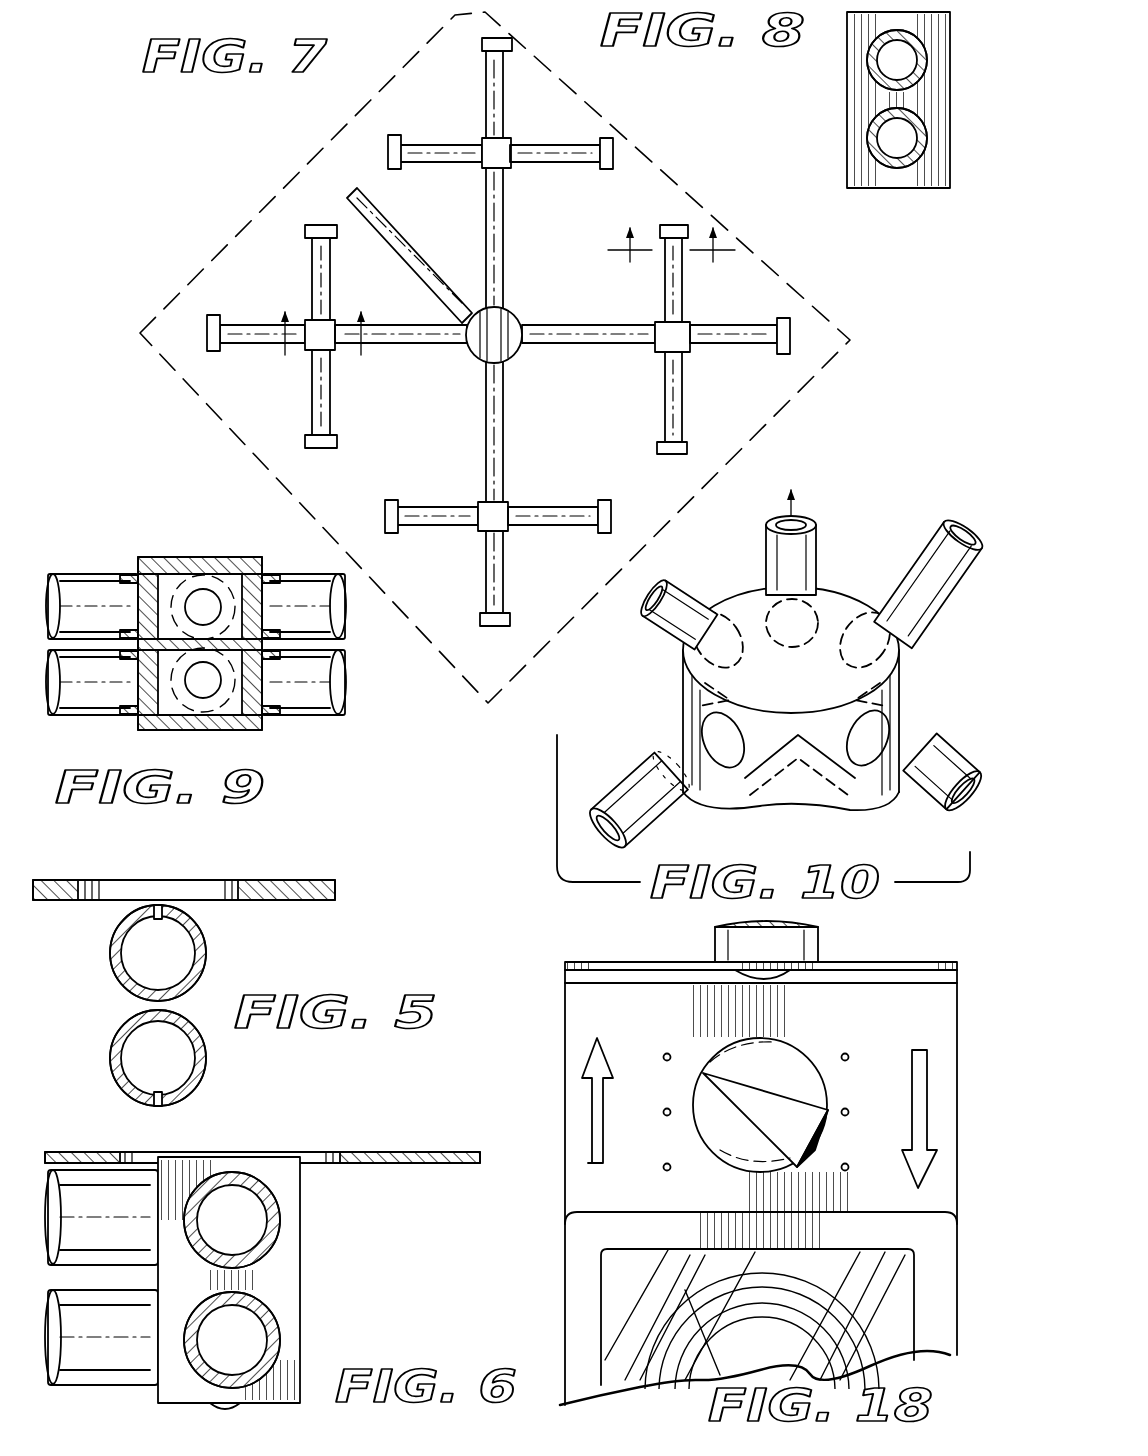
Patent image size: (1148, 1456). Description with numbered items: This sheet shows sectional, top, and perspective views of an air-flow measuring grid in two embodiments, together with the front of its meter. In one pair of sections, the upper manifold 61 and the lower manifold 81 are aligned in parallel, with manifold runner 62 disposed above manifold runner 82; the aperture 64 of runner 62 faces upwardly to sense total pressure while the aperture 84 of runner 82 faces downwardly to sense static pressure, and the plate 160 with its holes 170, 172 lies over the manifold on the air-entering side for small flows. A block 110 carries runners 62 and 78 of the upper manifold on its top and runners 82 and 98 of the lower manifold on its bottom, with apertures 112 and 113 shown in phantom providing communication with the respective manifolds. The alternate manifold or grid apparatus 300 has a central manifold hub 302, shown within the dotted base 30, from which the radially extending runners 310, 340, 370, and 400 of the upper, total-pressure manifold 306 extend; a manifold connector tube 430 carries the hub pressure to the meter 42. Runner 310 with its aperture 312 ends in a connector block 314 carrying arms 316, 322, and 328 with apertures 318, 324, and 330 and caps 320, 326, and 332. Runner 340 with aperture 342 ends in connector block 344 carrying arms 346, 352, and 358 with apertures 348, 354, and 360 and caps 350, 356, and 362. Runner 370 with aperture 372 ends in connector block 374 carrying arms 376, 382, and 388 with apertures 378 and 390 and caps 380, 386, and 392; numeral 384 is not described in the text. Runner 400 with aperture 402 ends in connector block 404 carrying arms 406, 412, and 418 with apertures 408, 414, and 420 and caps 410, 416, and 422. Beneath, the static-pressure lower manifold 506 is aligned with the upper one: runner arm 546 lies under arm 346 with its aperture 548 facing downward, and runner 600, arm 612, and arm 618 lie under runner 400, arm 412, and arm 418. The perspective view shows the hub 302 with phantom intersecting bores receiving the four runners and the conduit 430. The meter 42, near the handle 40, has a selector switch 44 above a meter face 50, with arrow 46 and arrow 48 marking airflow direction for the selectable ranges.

In FIG. 7, the base 30 is at (205, 265).
In FIG. 7, the manifold or grid apparatus 300 is at (258, 140).
In FIG. 7, the manifold hub 302 is at (510, 312).
In FIG. 10, the manifold hub 302 is at (820, 790).
In FIG. 7, the upper manifold 306 is at (321, 396).
In FIG. 8, the upper manifold 306 is at (891, 116).
In FIG. 9, the upper manifold 306 is at (228, 645).
In FIG. 10, the upper manifold 306 is at (786, 671).
In FIG. 7, the manifold runner 310 is at (495, 331).
In FIG. 10, the manifold runner 310 is at (885, 585).
In FIG. 7, the aperture 312 is at (495, 331).
In FIG. 7, the connector block 314 is at (508, 148).
In FIG. 7, the runner arm 316 is at (432, 171).
In FIG. 7, the aperture 318 is at (408, 158).
In FIG. 7, the cap 320 is at (395, 140).
In FIG. 7, the runner arm 322 is at (495, 331).
In FIG. 7, the aperture 324 is at (495, 331).
In FIG. 7, the cap 326 is at (508, 45).
In FIG. 7, the runner arm 328 is at (557, 153).
In FIG. 7, the aperture 330 is at (567, 162).
In FIG. 7, the cap 332 is at (608, 162).
In FIG. 7, the manifold runner 340 is at (588, 349).
In FIG. 10, the manifold runner 340 is at (935, 745).
In FIG. 7, the aperture 342 is at (588, 340).
In FIG. 7, the connector block 344 is at (690, 352).
In FIG. 7, the runner arm 346 is at (663, 280).
In FIG. 8, the runner arm 346 is at (873, 63).
In FIG. 7, the aperture 348 is at (672, 250).
In FIG. 8, the aperture 348 is at (854, 63).
In FIG. 7, the cap 350 is at (675, 232).
In FIG. 8, the cap 350 is at (860, 108).
In FIG. 7, the runner arm 352 is at (739, 333).
In FIG. 7, the aperture 354 is at (750, 345).
In FIG. 7, the cap 356 is at (820, 330).
In FIG. 7, the runner arm 358 is at (670, 397).
In FIG. 7, the aperture 360 is at (668, 427).
In FIG. 7, the cap 362 is at (660, 447).
In FIG. 7, the manifold runner 370 is at (522, 331).
In FIG. 10, the manifold runner 370 is at (660, 805).
In FIG. 7, the aperture 372 is at (522, 331).
In FIG. 7, the connector block 374 is at (508, 510).
In FIG. 7, the runner arm 376 is at (558, 514).
In FIG. 7, the aperture 378 is at (567, 530).
In FIG. 7, the cap 380 is at (611, 515).
In FIG. 7, the runner arm 382 is at (520, 331).
In FIG. 7, the bottom tube section end 384 is at (500, 605).
In FIG. 7, the cap 386 is at (480, 620).
In FIG. 7, the runner arm 388 is at (437, 514).
In FIG. 7, the aperture 390 is at (410, 505).
In FIG. 7, the cap 392 is at (390, 515).
In FIG. 7, the manifold runner 400 is at (401, 335).
In FIG. 9, the manifold runner 400 is at (315, 575).
In FIG. 10, the manifold runner 400 is at (670, 640).
In FIG. 7, the aperture 402 is at (425, 335).
In FIG. 7, the connector block 404 is at (335, 333).
In FIG. 9, the connector block 404 is at (180, 566).
In FIG. 7, the arm 406 is at (351, 396).
In FIG. 7, the aperture 408 is at (330, 420).
In FIG. 7, the cap 410 is at (335, 446).
In FIG. 7, the arm 412 is at (260, 335).
In FIG. 9, the arm 412 is at (96, 575).
In FIG. 7, the aperture 414 is at (235, 332).
In FIG. 7, the cap 416 is at (214, 322).
In FIG. 7, the arm 418 is at (290, 274).
In FIG. 9, the arm 418 is at (200, 592).
In FIG. 7, the aperture 420 is at (320, 243).
In FIG. 7, the cap 422 is at (320, 228).
In FIG. 7, the manifold connector tube 430 is at (430, 262).
In FIG. 10, the manifold connector tube 430 is at (815, 563).
In FIG. 8, the lower manifold 506 is at (868, 162).
In FIG. 9, the lower manifold 506 is at (350, 700).
In FIG. 8, the runner arm 546 is at (862, 164).
In FIG. 8, the aperture 548 is at (895, 162).
In FIG. 9, the manifold runner 600 is at (310, 705).
In FIG. 9, the runner arm 612 is at (90, 705).
In FIG. 9, the runner arm 618 is at (203, 698).
In FIG. 18, the handle 40 is at (715, 950).
In FIG. 18, the meter 42 is at (568, 1248).
In FIG. 18, the selector switch 44 is at (800, 1057).
In FIG. 18, the arrow 46 is at (918, 1056).
In FIG. 18, the arrow 48 is at (598, 1058).
In FIG. 18, the meter face 50 is at (905, 1270).
In FIG. 5, the upper manifold 61 is at (154, 953).
In FIG. 6, the upper manifold 61 is at (87, 1251).
In FIG. 5, the manifold runner 62 is at (185, 953).
In FIG. 6, the manifold runner 62 is at (101, 1206).
In FIG. 5, the aperture 64 is at (160, 912).
In FIG. 6, the manifold runner 78 is at (280, 1220).
In FIG. 5, the lower manifold 81 is at (156, 1068).
In FIG. 6, the lower manifold 81 is at (93, 1356).
In FIG. 5, the manifold runner 82 is at (183, 1068).
In FIG. 6, the manifold runner 82 is at (101, 1324).
In FIG. 5, the aperture 84 is at (160, 1104).
In FIG. 6, the manifold runner 98 is at (280, 1340).
In FIG. 6, the block 110 is at (290, 1266).
In FIG. 6, the aperture 112 is at (232, 1165).
In FIG. 6, the aperture 113 is at (220, 1403).
In FIG. 5, the plate 160 is at (195, 876).
In FIG. 6, the aperture 170 is at (262, 1141).
In FIG. 5, the aperture 172 is at (198, 893).